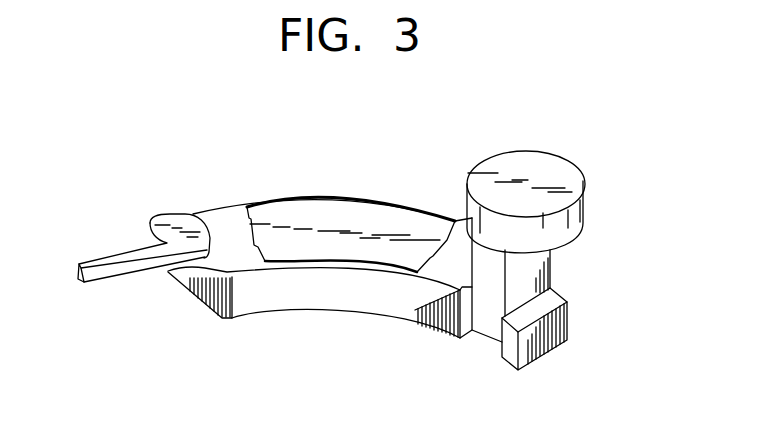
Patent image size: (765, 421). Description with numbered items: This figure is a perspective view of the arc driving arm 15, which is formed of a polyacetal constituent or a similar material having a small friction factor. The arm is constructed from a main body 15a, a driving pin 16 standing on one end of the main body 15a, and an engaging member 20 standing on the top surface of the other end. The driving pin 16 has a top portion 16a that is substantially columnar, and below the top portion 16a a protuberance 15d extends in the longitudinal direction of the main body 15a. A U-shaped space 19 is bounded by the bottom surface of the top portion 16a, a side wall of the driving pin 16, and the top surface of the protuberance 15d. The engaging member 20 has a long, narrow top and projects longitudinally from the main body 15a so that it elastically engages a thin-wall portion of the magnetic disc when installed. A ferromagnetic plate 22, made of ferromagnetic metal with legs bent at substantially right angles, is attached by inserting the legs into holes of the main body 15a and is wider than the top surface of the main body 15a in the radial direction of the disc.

The arc driving arm 15 is at (399, 251).
The main body 15a is at (334, 293).
The protuberance 15d is at (562, 322).
The driving pin 16 is at (566, 165).
The top portion 16a is at (565, 218).
The U-shaped space 19 is at (560, 266).
The engaging member 20 is at (100, 268).
The ferromagnetic plate 22 is at (341, 214).